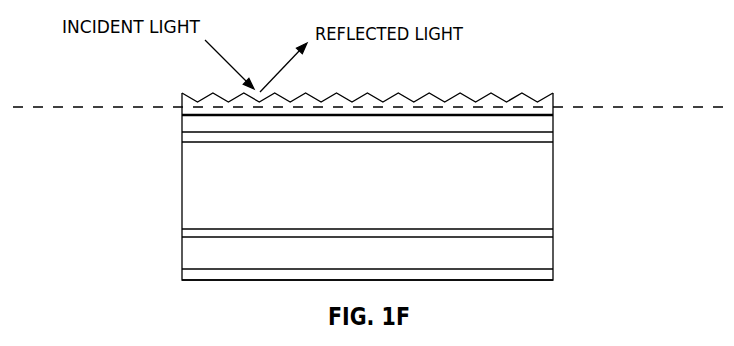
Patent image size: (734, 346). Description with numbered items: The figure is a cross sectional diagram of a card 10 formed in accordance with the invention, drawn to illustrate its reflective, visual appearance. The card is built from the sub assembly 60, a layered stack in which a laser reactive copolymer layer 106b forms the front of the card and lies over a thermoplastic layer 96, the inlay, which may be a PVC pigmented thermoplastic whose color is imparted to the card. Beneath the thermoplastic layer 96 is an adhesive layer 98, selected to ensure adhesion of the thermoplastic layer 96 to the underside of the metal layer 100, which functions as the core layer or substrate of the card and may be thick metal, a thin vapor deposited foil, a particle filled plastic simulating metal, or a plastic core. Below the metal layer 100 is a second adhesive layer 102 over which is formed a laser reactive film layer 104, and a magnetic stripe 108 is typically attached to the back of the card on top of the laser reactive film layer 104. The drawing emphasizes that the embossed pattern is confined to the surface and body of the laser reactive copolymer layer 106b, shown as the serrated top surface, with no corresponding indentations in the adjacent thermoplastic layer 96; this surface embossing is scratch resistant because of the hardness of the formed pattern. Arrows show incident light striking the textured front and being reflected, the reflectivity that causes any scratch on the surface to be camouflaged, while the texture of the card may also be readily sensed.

The display device 10 is at (667, 53).
The sub assembly 60 is at (92, 206).
The laser reactive copolymer layer 106b is at (553, 92).
The thermoplastic layer 96 is at (553, 120).
The adhesive layer 98 is at (553, 142).
The metal layer 100 is at (552, 182).
The adhesive layer 102 is at (552, 235).
The laser reactive film layer 104 is at (552, 258).
The magnetic stripe 108 is at (552, 283).